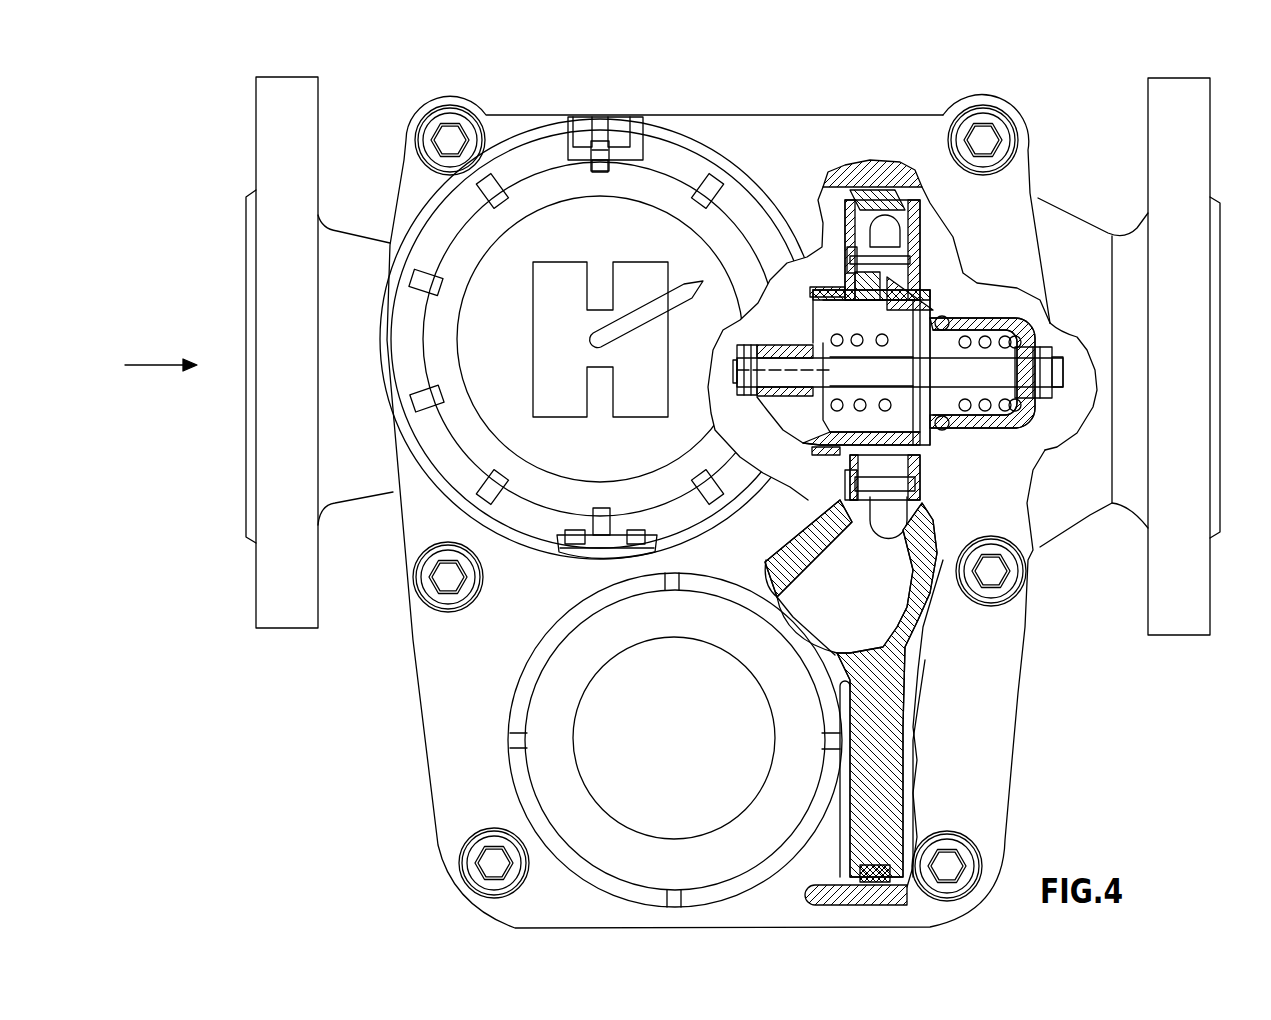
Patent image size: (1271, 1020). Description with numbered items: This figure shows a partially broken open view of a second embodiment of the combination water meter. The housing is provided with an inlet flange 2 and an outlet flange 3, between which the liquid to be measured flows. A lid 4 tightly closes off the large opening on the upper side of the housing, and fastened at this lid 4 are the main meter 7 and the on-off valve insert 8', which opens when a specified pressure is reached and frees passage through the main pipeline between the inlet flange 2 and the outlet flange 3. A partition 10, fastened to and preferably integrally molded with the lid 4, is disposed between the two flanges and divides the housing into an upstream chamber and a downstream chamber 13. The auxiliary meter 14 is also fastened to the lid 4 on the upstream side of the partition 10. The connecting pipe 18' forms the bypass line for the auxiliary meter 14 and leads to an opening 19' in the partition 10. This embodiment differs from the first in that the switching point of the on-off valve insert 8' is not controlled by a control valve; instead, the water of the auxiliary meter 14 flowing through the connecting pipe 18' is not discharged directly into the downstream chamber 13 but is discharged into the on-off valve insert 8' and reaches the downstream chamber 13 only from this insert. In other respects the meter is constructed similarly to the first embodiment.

The inlet flange 2 is at (262, 602).
The outlet flange 3 is at (1193, 612).
The lid 4 is at (430, 686).
The main meter 7 is at (727, 155).
The on-off valve insert 8' is at (885, 330).
The partition 10 is at (883, 780).
The downstream chamber 13 is at (1045, 452).
The auxiliary meter 14 is at (512, 767).
The connecting pipe 18' is at (808, 577).
The opening 19' is at (873, 543).